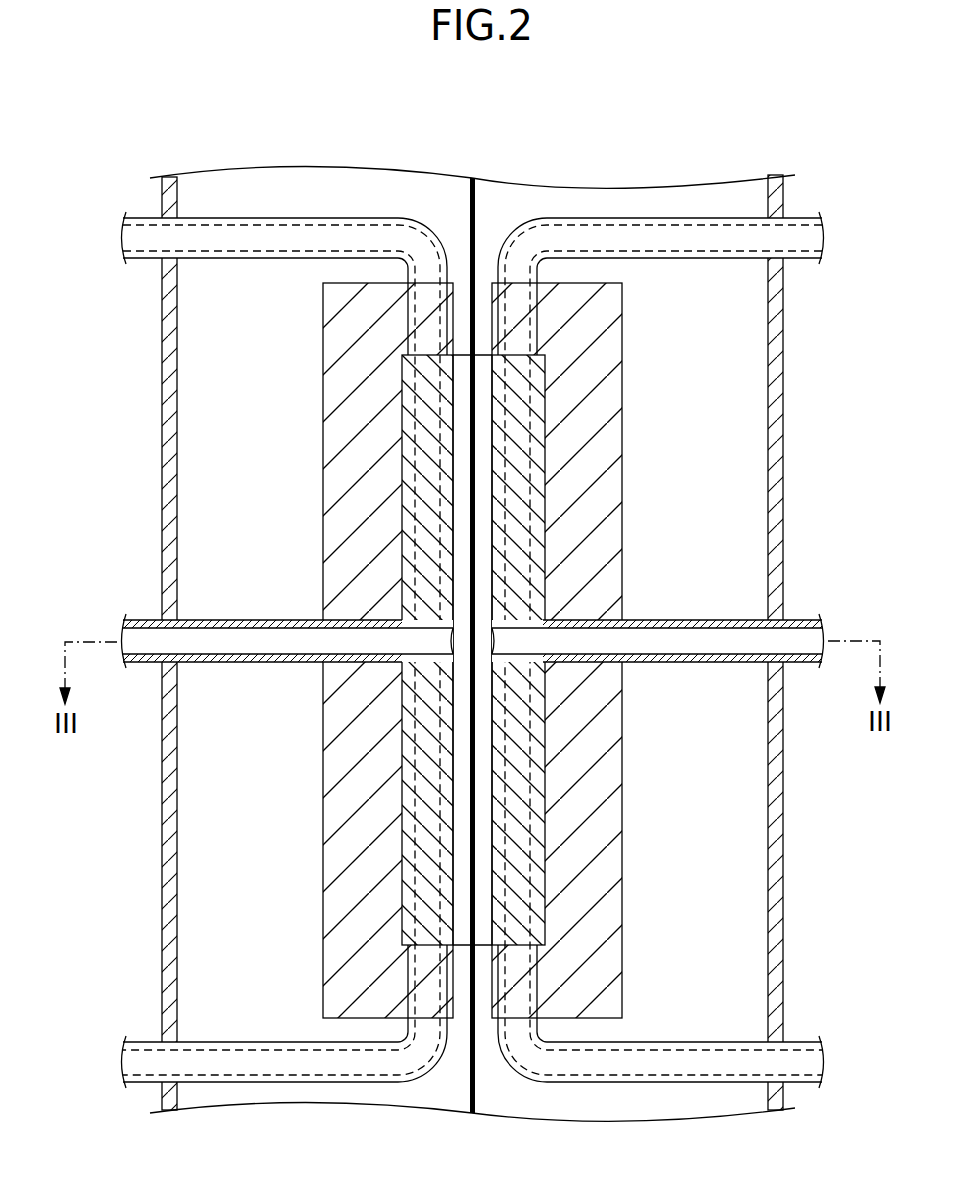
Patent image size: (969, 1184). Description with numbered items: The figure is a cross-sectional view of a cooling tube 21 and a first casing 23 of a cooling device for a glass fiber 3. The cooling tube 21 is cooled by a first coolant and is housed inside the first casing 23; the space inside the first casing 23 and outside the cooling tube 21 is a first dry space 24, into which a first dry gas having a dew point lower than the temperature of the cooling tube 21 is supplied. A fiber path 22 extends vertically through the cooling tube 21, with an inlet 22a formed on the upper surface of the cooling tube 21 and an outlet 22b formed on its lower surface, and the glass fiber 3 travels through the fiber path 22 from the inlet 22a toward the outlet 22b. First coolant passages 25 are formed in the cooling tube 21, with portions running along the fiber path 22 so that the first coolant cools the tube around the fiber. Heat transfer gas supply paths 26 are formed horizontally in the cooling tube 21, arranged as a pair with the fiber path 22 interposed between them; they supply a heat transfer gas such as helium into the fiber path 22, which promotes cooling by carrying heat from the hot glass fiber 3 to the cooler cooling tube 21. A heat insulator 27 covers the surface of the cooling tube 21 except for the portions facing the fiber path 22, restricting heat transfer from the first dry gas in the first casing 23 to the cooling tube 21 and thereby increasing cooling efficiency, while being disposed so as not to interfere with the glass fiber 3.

The glass fiber 3 is at (475, 203).
The cooling tube 21 is at (533, 515).
The fiber path 22 is at (490, 406).
The inlet 22a is at (515, 383).
The outlet 22b is at (487, 948).
The first casing 23 is at (785, 383).
The first dry space 24 is at (254, 507).
The first coolant passage 25 is at (527, 480).
The heat transfer gas supply path 26 is at (537, 625).
The heat insulator 27 is at (610, 918).